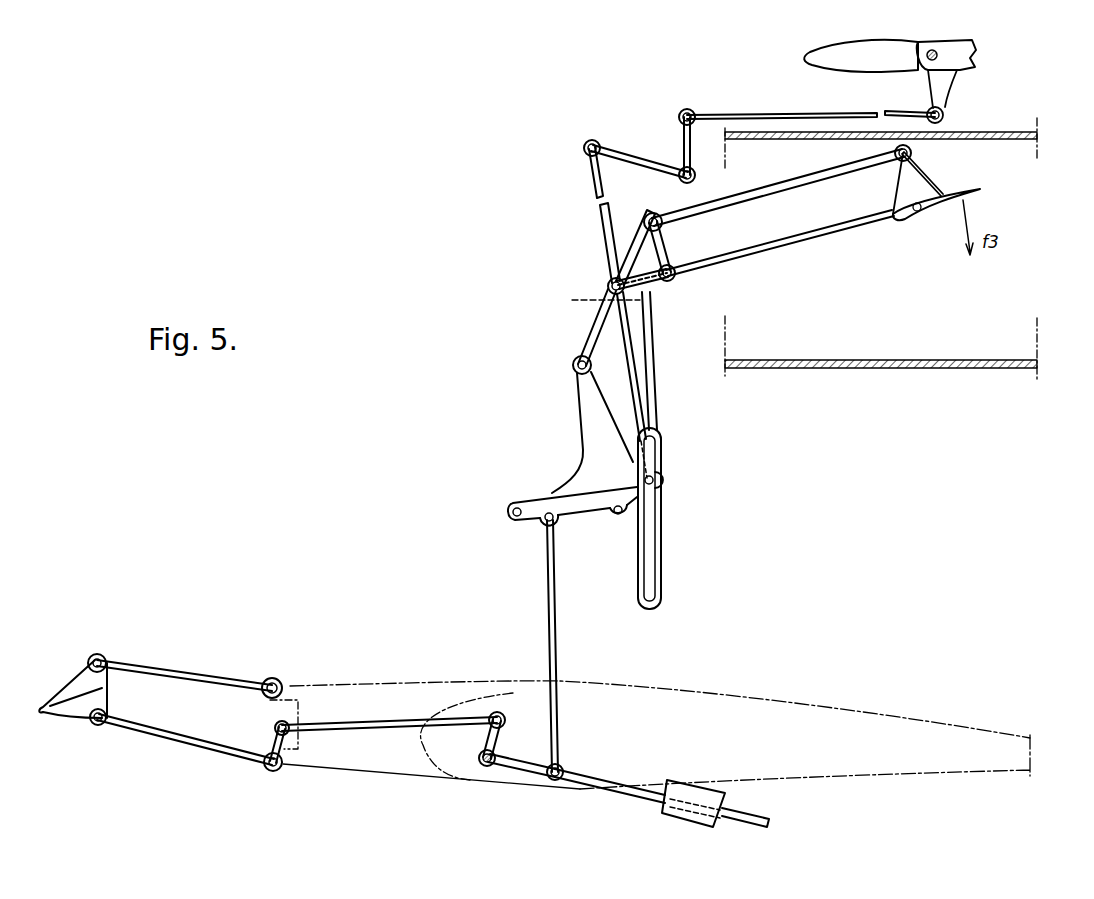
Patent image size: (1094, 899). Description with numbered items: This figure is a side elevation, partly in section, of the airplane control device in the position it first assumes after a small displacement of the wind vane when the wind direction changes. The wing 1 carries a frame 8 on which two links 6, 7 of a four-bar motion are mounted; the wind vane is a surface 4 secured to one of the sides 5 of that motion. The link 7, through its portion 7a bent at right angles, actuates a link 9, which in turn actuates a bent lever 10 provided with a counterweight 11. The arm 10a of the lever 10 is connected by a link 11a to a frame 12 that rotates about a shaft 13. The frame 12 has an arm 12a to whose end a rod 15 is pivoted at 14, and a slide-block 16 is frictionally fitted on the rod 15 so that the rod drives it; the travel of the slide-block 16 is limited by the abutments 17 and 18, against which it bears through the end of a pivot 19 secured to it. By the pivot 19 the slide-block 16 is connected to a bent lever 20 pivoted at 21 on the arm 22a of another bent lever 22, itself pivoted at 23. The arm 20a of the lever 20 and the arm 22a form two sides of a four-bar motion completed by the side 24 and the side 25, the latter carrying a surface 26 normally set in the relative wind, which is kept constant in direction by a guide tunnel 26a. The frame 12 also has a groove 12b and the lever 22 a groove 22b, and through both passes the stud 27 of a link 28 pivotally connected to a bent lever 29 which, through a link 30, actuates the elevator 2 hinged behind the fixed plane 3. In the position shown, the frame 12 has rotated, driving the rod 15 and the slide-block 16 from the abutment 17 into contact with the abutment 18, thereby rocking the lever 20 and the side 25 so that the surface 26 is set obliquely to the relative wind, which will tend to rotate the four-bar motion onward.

The wing 1 is at (770, 695).
The elevator 2 is at (962, 60).
The fixed plane 3 is at (885, 62).
The surface 4 is at (62, 702).
The side 5 is at (85, 716).
The link 6 is at (210, 680).
The link 7 is at (175, 737).
The bent portion 7a is at (273, 740).
The frame 8 is at (360, 770).
The link 9 is at (372, 723).
The bent lever 10 is at (487, 740).
The arm 10a is at (513, 766).
The counterweight 11 is at (687, 811).
The link 11a is at (555, 617).
The frame 12 is at (587, 513).
The arm 12a is at (585, 391).
The groove 12b is at (527, 513).
The shaft 13 is at (618, 517).
The pivot 14 is at (574, 362).
The rod 15 is at (602, 322).
The slide-block 16 is at (608, 287).
The abutment 17 is at (642, 265).
The abutment 18 is at (595, 300).
The pivot 19 is at (619, 272).
The bent lever 20 is at (657, 290).
The arm 20a is at (663, 245).
The pivot 21 is at (673, 278).
The bent lever 22 is at (648, 355).
The arm 22a is at (773, 243).
The groove 22b is at (650, 515).
The pivot 23 is at (653, 305).
The side 24 is at (767, 187).
The side 25 is at (935, 185).
The surface 26 is at (928, 208).
The guide tunnel 26a is at (1012, 338).
The stud 27 is at (657, 477).
The link 28 is at (607, 207).
The bent lever 29 is at (648, 163).
The link 30 is at (857, 109).